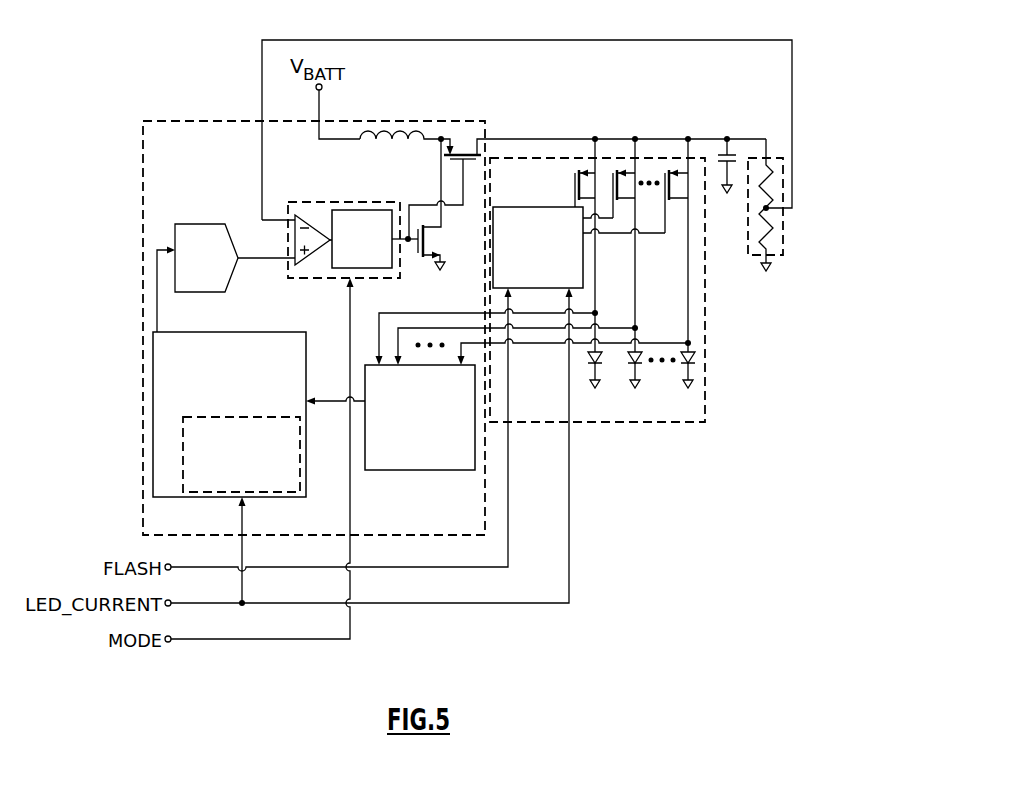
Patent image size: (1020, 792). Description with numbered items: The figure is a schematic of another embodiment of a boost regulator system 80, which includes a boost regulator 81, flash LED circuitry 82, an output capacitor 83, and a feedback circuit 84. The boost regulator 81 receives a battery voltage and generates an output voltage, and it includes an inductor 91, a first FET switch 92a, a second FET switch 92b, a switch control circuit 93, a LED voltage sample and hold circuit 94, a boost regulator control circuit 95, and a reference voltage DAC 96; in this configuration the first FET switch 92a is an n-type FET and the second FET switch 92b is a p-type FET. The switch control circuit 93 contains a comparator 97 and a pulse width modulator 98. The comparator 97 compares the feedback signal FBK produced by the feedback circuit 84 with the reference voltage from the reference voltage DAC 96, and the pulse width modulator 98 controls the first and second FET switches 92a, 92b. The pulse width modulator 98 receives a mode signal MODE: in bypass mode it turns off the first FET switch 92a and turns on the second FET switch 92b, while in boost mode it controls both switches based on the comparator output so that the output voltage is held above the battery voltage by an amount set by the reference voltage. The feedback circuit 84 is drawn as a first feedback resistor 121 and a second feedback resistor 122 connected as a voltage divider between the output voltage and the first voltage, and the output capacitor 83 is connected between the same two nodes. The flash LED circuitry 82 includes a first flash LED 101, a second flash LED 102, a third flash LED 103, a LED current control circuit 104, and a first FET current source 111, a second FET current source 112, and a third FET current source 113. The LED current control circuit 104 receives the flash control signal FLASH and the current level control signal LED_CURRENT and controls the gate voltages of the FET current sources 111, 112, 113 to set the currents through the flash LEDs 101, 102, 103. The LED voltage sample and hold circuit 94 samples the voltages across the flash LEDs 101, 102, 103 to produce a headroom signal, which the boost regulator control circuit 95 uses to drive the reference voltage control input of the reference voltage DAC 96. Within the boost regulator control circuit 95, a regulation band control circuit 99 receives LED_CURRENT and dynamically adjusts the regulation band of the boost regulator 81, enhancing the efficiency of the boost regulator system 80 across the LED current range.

The boost regulator system 80 is at (108, 56).
The boost regulator 81 is at (208, 121).
The flash LED circuitry 82 is at (705, 390).
The output capacitor 83 is at (727, 139).
The feedback circuit 84 is at (745, 191).
The inductor 91 is at (372, 141).
The first FET switch 92a is at (417, 250).
The second FET switch 92b is at (460, 160).
The switch control circuit 93 is at (300, 280).
The LED voltage sample and hold circuit 94 is at (420, 470).
The boost regulator control circuit 95 is at (277, 497).
The reference voltage digital-to-analog converter 96 is at (200, 292).
The comparator 97 is at (313, 222).
The pulse width modulator 98 is at (357, 210).
The regulation band control circuit 99 is at (183, 445).
The first flash LED 101 is at (588, 356).
The second flash LED 102 is at (630, 362).
The third flash LED 103 is at (688, 343).
The LED current control circuit 104 is at (565, 289).
The first FET current source 111 is at (575, 190).
The second FET current source 112 is at (613, 170).
The third FET current source 113 is at (665, 170).
The first feedback resistor 121 is at (762, 164).
The second feedback resistor 122 is at (760, 253).